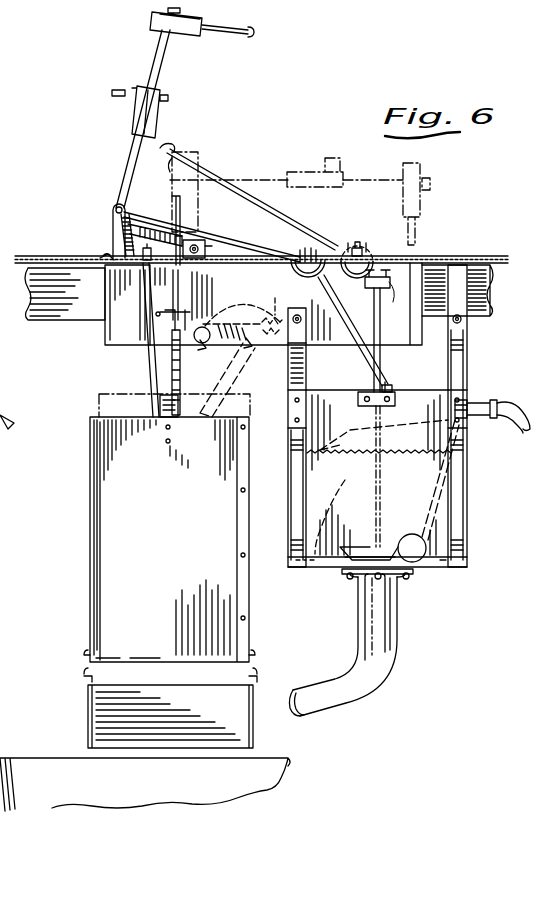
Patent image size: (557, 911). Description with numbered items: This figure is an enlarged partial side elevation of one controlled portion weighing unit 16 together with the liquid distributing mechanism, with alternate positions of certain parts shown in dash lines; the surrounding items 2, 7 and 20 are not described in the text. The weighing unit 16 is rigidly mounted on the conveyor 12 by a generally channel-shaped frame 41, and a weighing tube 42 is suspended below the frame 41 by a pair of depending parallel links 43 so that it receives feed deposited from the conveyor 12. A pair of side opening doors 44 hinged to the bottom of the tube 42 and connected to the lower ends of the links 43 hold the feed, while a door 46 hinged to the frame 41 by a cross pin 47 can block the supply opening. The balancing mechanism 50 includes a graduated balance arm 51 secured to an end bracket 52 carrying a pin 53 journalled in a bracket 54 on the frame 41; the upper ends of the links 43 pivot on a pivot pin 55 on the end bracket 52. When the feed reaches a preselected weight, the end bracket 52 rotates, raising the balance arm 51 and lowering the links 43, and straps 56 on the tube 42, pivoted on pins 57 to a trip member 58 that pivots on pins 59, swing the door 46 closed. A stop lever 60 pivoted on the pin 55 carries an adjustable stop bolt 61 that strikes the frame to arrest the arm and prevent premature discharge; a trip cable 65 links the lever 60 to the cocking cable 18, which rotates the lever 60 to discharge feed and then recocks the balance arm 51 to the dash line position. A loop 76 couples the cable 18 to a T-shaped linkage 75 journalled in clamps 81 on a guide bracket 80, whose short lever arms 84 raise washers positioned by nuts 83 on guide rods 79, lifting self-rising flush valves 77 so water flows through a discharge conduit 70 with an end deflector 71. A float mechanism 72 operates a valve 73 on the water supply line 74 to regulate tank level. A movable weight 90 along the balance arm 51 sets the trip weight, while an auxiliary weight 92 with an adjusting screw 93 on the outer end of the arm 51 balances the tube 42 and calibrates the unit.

The conveyor 2 is at (145, 761).
The wheel 7 is at (428, 491).
The conveyor 12 is at (492, 294).
The controlled portion weighing unit 16 is at (104, 384).
The cocking cable 18 is at (497, 255).
The dispensing assembly 20 is at (488, 378).
The frame 41 is at (410, 284).
The weighing tube 42 is at (90, 628).
The depending parallel links 43 is at (163, 284).
The side opening doors 44 is at (86, 692).
The door 46 is at (220, 312).
The cross pin 47 is at (275, 298).
The balancing mechanism 50 is at (220, 163).
The graduated balance arm 51 is at (164, 60).
The end bracket 52 is at (116, 210).
The pin 53 is at (192, 262).
The bracket 54 is at (201, 254).
The pivot pin 55 is at (116, 240).
The straps 56 is at (158, 407).
The pins 57 is at (148, 352).
The trip member 58 is at (244, 350).
The pins 59 is at (196, 343).
The stop lever 60 is at (112, 204).
The adjustable stop bolt 61 is at (94, 248).
The trip cable 65 is at (212, 232).
The discharge conduit 70 is at (388, 638).
The end deflector 71 is at (470, 518).
The float mechanism 72 is at (316, 449).
The valve 73 is at (467, 420).
The water supply line 74 is at (524, 402).
The linkage 75 is at (348, 330).
The loop 76 is at (315, 266).
The flush valves 77 is at (338, 516).
The guide rod 79 is at (383, 488).
The guide bracket 80 is at (388, 398).
The clamps 81 is at (390, 383).
The nuts 83 is at (392, 297).
The short lever arms 84 is at (372, 386).
The movable weight 90 is at (132, 118).
The auxiliary weight 92 is at (150, 25).
The adjusting screw 93 is at (246, 42).